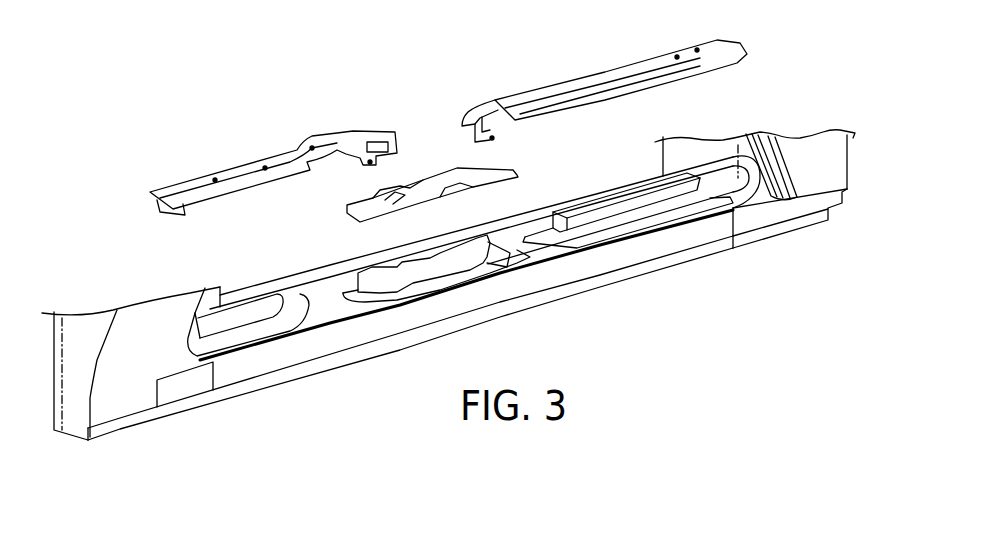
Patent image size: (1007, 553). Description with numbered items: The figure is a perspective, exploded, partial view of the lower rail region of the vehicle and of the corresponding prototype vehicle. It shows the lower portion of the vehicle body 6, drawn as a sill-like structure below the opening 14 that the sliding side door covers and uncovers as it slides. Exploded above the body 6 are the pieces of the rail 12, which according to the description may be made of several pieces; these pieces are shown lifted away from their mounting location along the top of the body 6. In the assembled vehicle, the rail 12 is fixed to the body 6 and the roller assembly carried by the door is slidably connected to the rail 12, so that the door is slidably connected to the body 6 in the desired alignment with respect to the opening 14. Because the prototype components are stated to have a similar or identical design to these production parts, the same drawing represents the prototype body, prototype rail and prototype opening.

The vehicle body 6 is at (603, 263).
The rail 12 is at (280, 163).
The opening 14 is at (283, 247).